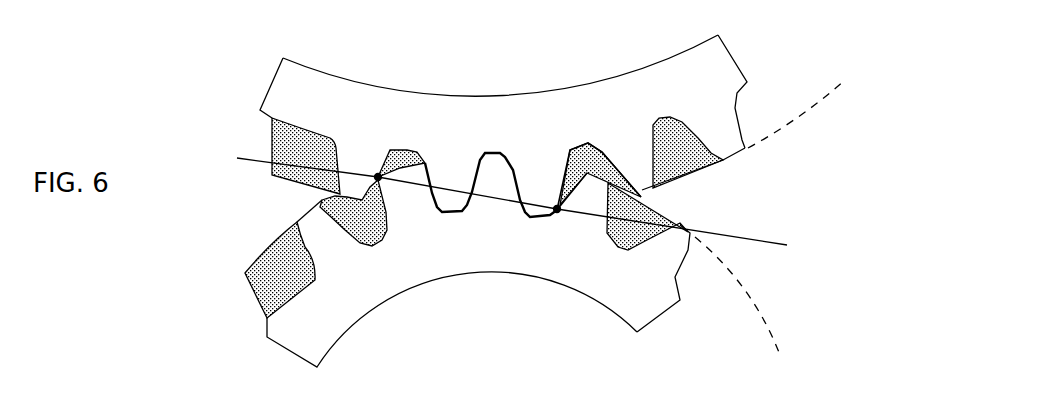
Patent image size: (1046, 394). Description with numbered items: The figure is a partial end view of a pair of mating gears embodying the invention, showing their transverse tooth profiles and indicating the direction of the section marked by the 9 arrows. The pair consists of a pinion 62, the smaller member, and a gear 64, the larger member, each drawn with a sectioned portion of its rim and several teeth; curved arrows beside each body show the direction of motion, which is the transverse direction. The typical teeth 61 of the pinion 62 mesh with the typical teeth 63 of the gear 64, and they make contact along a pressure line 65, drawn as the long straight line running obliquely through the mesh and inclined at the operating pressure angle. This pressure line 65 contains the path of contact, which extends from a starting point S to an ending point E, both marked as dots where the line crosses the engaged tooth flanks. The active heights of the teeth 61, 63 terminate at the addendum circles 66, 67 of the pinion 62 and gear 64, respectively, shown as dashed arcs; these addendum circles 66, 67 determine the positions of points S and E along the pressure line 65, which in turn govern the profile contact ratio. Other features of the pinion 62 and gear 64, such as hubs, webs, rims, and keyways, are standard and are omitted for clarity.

The teeth 61 is at (592, 207).
The pinion 62 is at (362, 372).
The teeth 63 is at (638, 163).
The gear 64 is at (393, 68).
The pressure line 65 is at (723, 236).
The addendum circle 66 is at (747, 310).
The addendum circle 67 is at (825, 95).
The section direction 9 is at (237, 158).
The ending point E is at (378, 177).
The starting point S is at (557, 209).